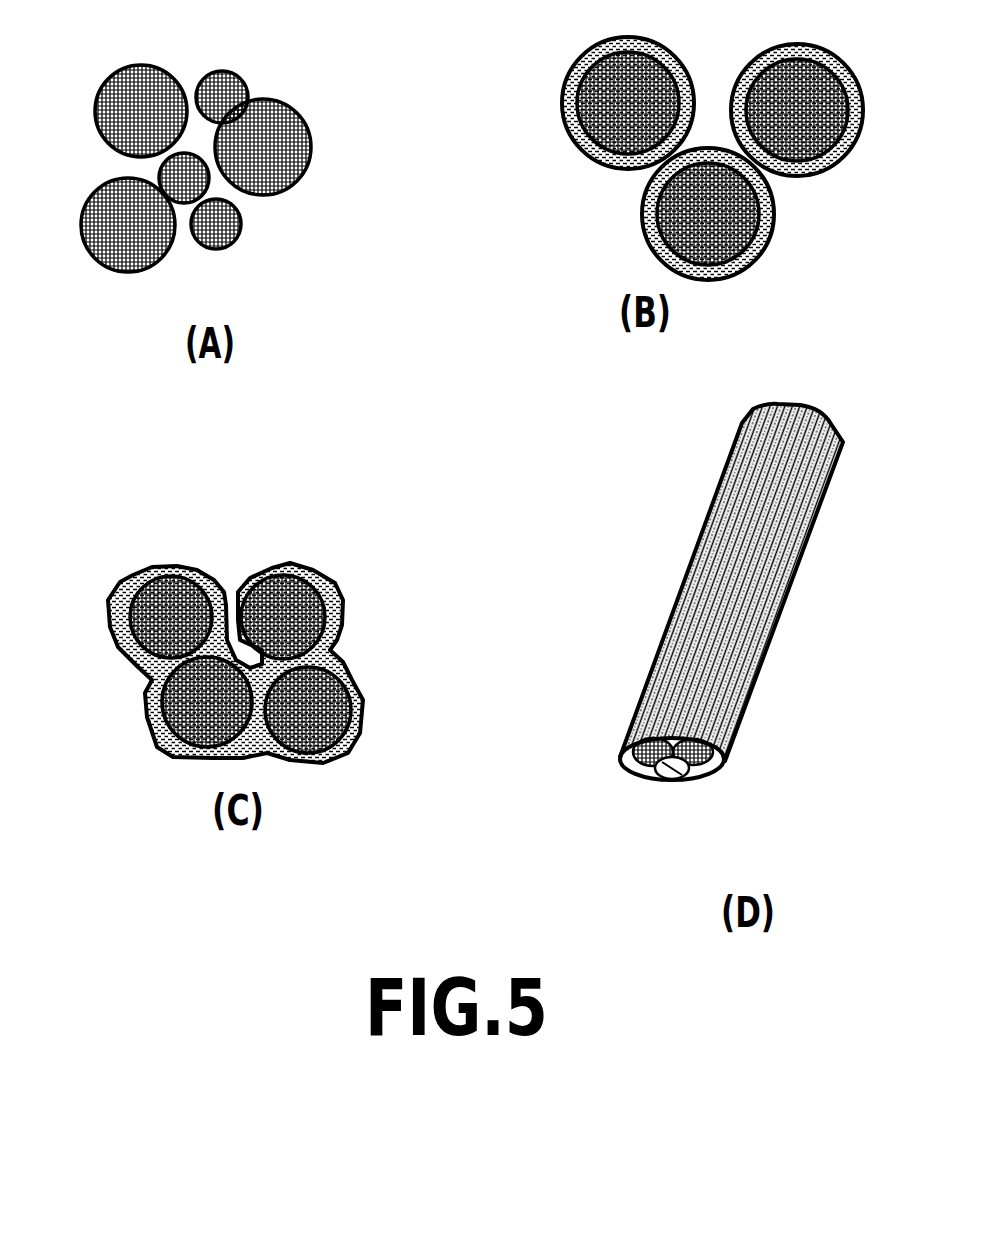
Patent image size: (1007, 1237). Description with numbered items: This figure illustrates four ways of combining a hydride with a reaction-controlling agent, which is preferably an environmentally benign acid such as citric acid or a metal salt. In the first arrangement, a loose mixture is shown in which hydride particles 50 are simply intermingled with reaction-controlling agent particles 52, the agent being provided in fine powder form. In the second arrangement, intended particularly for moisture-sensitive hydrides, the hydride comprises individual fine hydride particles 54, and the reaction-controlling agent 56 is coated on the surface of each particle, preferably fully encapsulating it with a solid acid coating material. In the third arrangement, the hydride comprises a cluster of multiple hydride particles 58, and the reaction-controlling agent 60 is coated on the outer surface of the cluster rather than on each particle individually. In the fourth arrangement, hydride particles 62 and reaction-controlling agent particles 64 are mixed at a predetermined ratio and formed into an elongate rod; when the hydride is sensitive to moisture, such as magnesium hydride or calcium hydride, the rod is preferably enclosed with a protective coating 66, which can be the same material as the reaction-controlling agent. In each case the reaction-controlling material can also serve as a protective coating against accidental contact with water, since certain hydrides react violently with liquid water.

The hydride particles 50 is at (282, 160).
The reaction-controlling agent particles 52 is at (205, 218).
The hydride particles 54 is at (613, 112).
The reaction-controlling agent 56 is at (563, 97).
The hydride particles 58 is at (288, 618).
The reaction-controlling agent 60 is at (295, 563).
The hydride particles 62 is at (632, 755).
The reaction-controlling agent particles 64 is at (677, 777).
The protective coating 66 is at (763, 530).